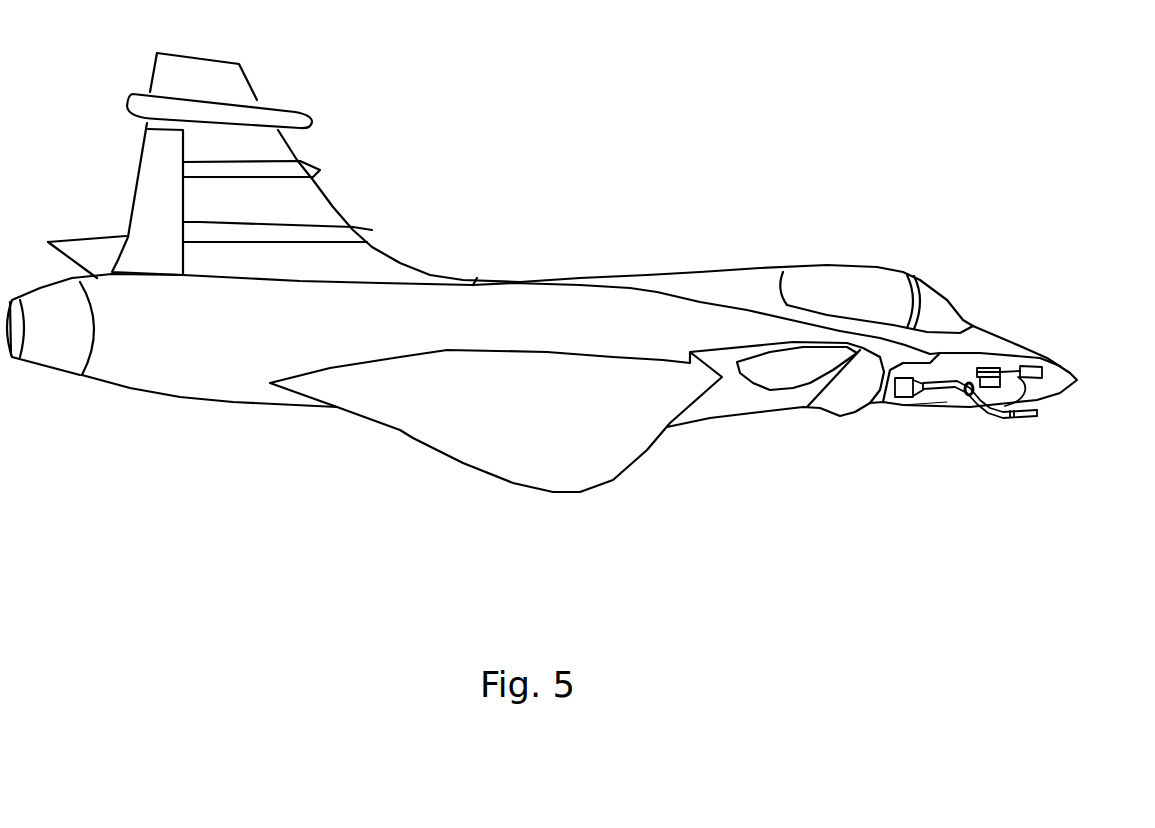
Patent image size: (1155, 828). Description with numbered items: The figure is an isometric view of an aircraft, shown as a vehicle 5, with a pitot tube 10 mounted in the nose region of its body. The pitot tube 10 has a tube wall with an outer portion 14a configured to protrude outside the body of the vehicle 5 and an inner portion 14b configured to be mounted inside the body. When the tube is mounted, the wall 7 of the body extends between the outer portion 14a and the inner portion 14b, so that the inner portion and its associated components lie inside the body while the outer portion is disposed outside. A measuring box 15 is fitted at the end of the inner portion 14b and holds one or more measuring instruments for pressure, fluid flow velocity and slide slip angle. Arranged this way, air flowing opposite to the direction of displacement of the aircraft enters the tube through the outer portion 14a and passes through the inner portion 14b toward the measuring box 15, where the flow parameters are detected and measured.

The vehicle 5 is at (673, 243).
The wall of the body 7 is at (947, 402).
The pitot tube 10 is at (1013, 355).
The outer portion 14a is at (1000, 413).
The inner portion 14b is at (947, 380).
The measuring box 15 is at (910, 378).